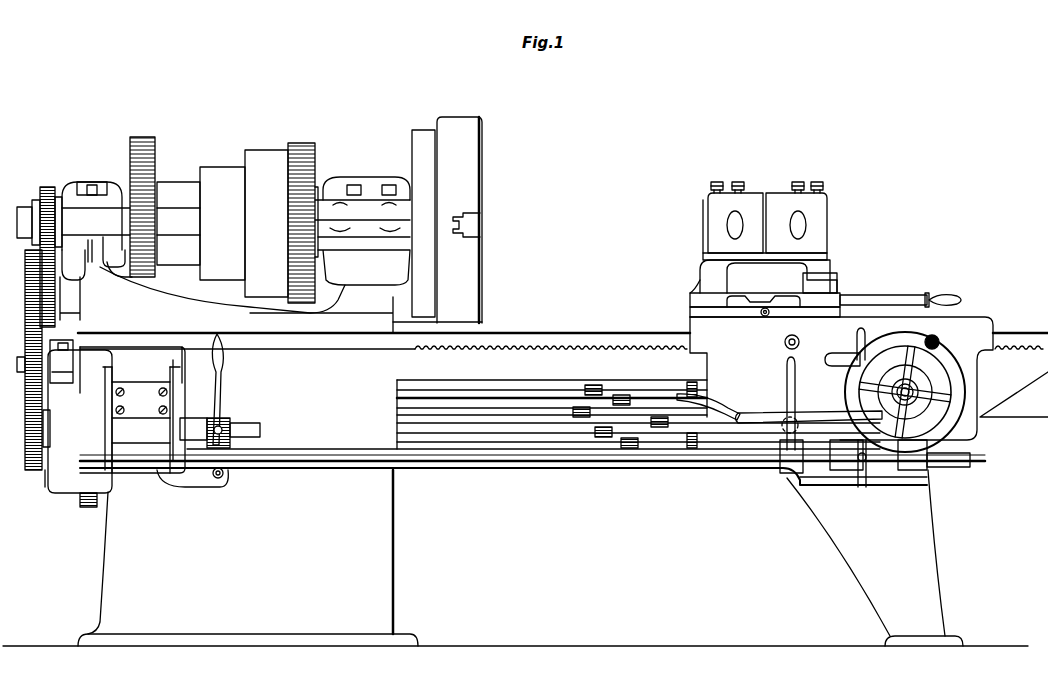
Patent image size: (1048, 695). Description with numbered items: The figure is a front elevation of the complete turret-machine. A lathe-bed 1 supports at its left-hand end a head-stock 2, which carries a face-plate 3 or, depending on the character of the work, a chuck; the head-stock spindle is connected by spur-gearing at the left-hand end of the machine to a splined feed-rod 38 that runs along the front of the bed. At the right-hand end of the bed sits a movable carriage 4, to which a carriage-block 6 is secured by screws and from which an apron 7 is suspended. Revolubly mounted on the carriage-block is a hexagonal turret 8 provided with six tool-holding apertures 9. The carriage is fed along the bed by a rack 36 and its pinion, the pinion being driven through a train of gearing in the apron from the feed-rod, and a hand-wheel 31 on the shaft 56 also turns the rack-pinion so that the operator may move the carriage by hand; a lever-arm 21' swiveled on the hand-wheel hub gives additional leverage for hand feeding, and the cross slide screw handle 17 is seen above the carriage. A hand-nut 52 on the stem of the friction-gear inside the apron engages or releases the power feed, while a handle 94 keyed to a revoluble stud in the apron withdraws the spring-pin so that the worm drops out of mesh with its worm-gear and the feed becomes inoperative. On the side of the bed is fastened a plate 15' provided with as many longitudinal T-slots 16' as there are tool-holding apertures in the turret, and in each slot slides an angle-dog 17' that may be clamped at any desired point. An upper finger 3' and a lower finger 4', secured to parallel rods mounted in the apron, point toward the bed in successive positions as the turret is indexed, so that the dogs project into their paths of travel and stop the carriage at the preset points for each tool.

The lathe-bed 1 is at (525, 489).
The head-stock 2 is at (212, 304).
The face-plate 3 is at (447, 220).
The movable carriage 4 is at (848, 387).
The carriage-block 6 is at (704, 269).
The apron 7 is at (977, 378).
The hexagonal turret 8 is at (828, 222).
The tool-holding apertures 9 is at (793, 221).
The plate 15' is at (552, 402).
The longitudinal T-slots 16' is at (617, 417).
The cross feed handle 17 is at (917, 288).
The angle-dog 17' is at (620, 401).
The lever-arm 21' is at (809, 407).
The upper finger 3' is at (706, 389).
The lower finger 4' is at (688, 464).
The ball handle 31 is at (945, 355).
The rack 36 is at (572, 352).
The splined feed-rod 38 is at (340, 467).
The hand-nut 52 is at (840, 358).
The shaft 56 is at (905, 392).
The handle 94 is at (778, 375).